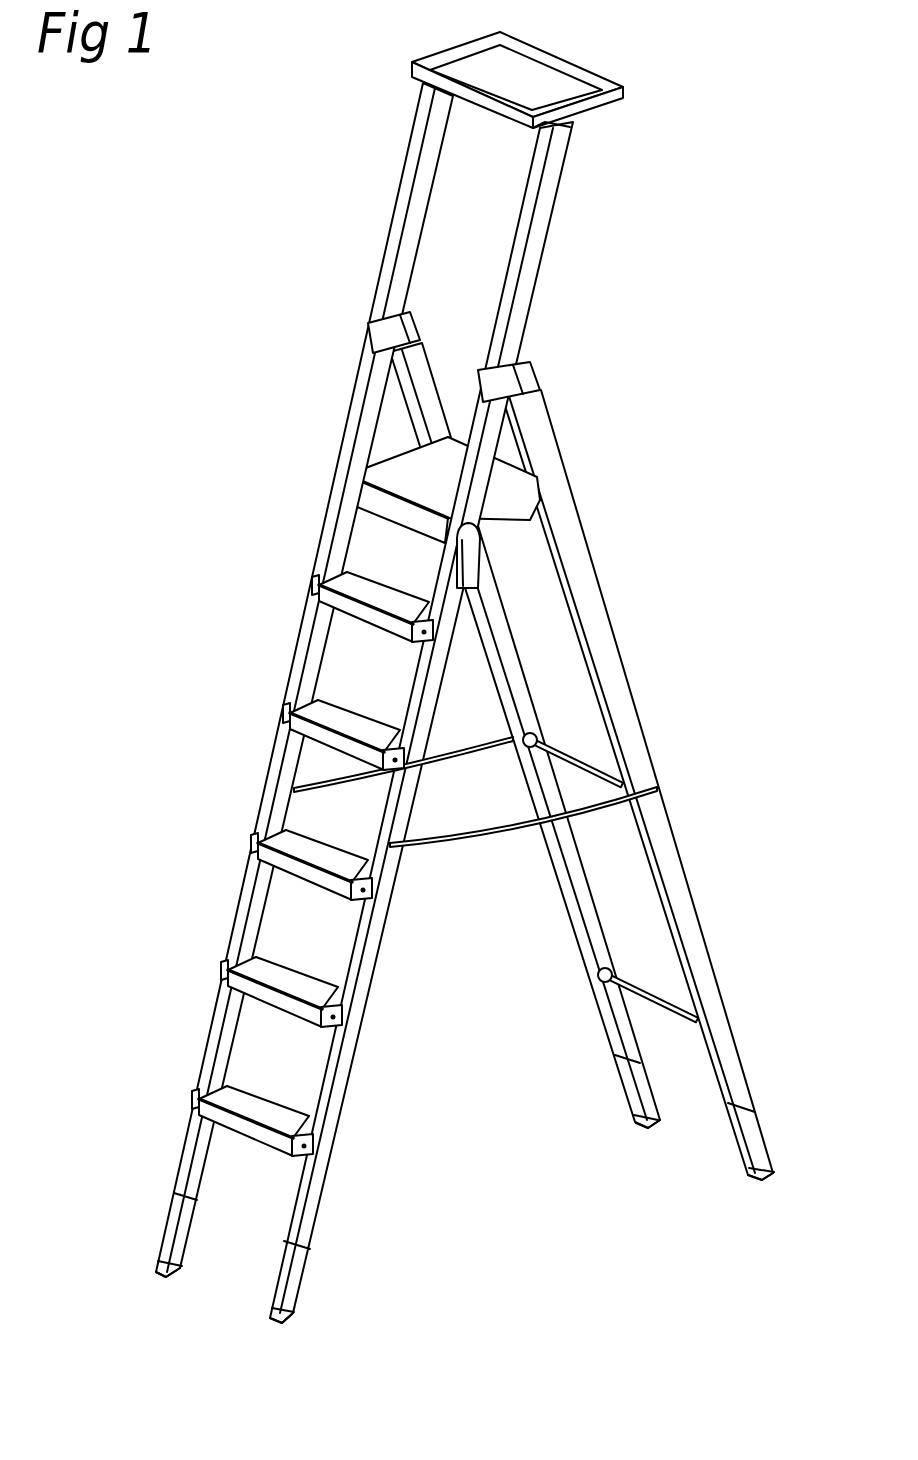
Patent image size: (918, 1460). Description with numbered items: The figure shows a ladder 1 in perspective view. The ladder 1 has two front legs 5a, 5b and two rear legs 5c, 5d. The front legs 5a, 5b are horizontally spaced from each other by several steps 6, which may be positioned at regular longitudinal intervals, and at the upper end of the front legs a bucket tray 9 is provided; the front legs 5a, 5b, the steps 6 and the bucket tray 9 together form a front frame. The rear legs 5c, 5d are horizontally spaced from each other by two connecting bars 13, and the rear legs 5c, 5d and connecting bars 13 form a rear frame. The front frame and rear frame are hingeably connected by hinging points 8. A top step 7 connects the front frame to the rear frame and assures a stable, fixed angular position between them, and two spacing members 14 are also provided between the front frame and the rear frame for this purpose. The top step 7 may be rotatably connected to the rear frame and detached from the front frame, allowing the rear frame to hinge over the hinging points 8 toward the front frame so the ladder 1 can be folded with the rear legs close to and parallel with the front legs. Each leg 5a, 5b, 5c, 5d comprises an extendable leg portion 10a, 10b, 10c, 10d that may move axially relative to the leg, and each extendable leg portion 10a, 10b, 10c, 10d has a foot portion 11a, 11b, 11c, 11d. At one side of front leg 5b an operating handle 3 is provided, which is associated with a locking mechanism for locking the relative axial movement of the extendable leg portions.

The ladder 1 is at (283, 371).
The operating handle 3 is at (470, 547).
The front leg 5a is at (185, 1152).
The front leg 5b is at (367, 973).
The rear leg 5c is at (497, 628).
The rear leg 5d is at (605, 657).
The steps 6 is at (290, 840).
The top step 7 is at (395, 478).
The hinging points 8 is at (390, 334).
The bucket tray 9 is at (537, 78).
The extendable leg portion 10a is at (168, 1228).
The extendable leg portion 10b is at (293, 1278).
The extendable leg portion 10c is at (640, 1093).
The extendable leg portion 10d is at (752, 1148).
The foot portion 11a is at (165, 1275).
The foot portion 11b is at (280, 1321).
The foot portion 11c is at (650, 1133).
The foot portion 11d is at (772, 1177).
The connecting bars 13 is at (578, 758).
The spacing members 14 is at (440, 762).